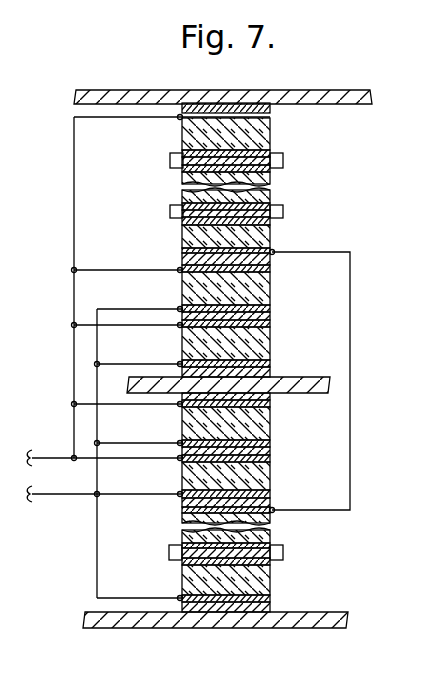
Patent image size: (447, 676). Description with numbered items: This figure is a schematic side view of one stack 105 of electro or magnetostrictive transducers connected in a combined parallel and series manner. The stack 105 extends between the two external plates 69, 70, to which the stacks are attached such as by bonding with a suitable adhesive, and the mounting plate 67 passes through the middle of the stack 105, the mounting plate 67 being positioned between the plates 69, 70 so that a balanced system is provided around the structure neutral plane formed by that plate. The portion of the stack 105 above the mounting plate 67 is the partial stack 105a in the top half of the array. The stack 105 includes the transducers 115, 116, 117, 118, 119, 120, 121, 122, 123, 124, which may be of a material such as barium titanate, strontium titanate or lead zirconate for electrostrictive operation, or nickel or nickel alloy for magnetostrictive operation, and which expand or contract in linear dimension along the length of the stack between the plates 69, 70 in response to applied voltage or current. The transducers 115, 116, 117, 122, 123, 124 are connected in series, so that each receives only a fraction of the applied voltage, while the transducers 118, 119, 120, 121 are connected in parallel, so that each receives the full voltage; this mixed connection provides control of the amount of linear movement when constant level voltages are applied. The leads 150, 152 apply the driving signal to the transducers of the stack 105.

The external plate 69 is at (371, 99).
The external plate 70 is at (327, 613).
The mounting plate 67 is at (315, 379).
The stack 105 is at (380, 365).
The partial stack 105a is at (352, 181).
The transducer 115 is at (268, 130).
The transducer 116 is at (262, 176).
The transducer 117 is at (268, 232).
The transducer 118 is at (270, 290).
The transducer 119 is at (270, 344).
The transducer 120 is at (268, 427).
The transducer 121 is at (265, 475).
The transducer 122 is at (268, 520).
The transducer 123 is at (270, 541).
The transducer 124 is at (265, 585).
The lead 150 is at (51, 454).
The lead 152 is at (60, 511).